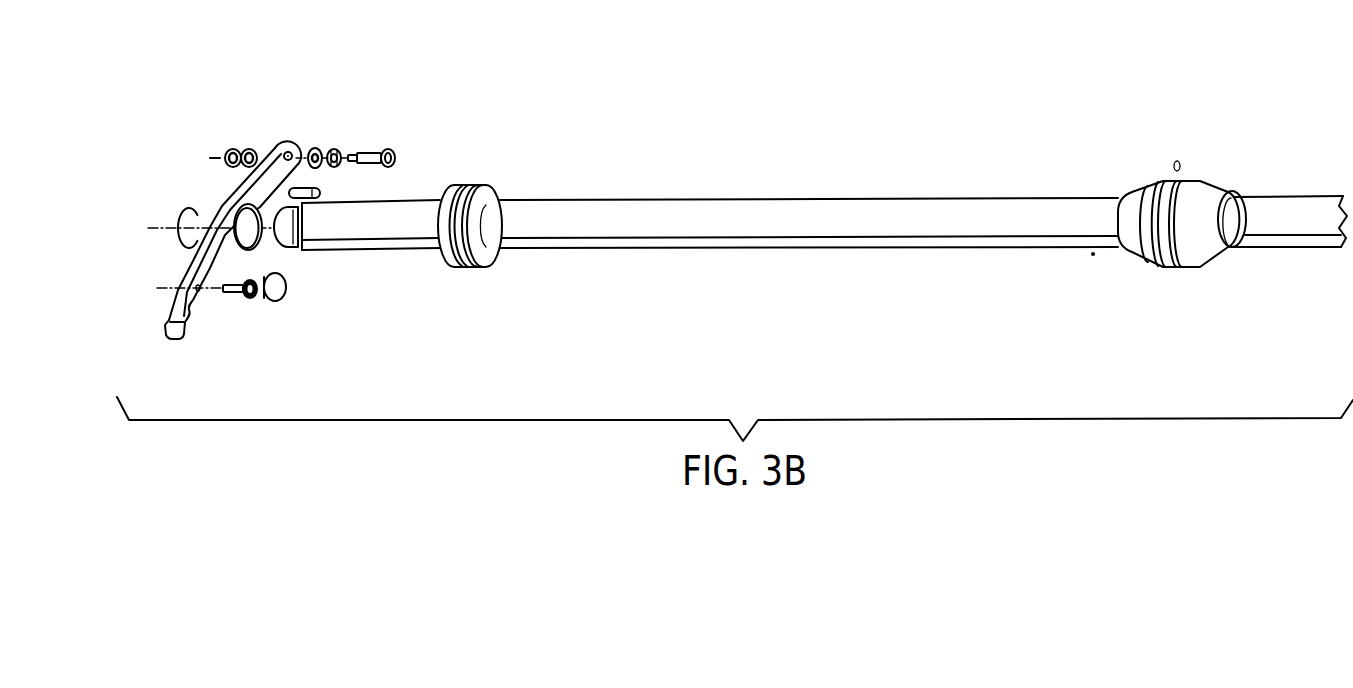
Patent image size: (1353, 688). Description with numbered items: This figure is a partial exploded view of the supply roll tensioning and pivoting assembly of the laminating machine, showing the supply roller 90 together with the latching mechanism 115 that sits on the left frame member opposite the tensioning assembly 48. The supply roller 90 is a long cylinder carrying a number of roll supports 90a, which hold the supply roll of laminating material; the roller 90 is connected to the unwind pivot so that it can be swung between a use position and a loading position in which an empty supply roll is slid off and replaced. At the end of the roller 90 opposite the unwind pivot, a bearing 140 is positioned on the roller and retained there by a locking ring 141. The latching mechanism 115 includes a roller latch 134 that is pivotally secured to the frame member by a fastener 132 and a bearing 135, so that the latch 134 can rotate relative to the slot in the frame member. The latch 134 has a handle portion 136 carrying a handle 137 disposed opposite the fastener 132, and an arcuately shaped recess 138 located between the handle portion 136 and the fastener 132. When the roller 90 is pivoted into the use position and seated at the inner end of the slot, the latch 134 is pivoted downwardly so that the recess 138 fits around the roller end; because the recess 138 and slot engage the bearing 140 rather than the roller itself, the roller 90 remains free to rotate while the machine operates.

The tensioning assembly 48 is at (829, 98).
The supply roller 90 is at (408, 228).
The roll supports 90a is at (482, 185).
The latching mechanism 115 is at (260, 130).
The fastener 132 is at (370, 150).
The roller latch 134 is at (183, 271).
The bearing 135 is at (333, 147).
The handle portion 136 is at (166, 333).
The handle 137 is at (273, 300).
The recess 138 is at (235, 218).
The bearing 140 is at (260, 246).
The locking ring 141 is at (177, 217).